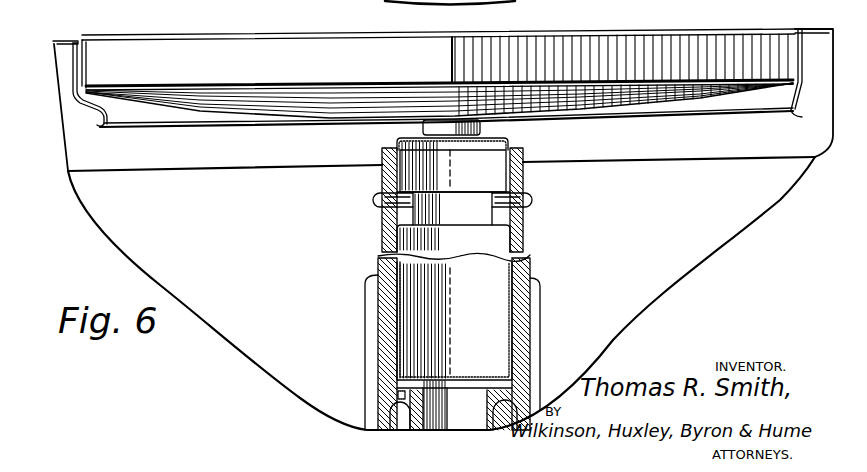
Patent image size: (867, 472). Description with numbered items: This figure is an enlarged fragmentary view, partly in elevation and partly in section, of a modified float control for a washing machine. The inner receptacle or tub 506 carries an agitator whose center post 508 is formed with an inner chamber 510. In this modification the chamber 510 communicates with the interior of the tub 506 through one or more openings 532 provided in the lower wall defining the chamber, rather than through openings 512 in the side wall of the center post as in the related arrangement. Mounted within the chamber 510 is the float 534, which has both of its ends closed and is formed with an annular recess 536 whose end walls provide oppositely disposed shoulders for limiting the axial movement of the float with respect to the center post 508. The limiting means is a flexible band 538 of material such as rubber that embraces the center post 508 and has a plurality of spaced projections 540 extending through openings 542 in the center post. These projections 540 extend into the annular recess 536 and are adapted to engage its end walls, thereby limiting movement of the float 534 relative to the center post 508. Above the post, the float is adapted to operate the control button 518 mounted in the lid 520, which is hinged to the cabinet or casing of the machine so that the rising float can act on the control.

The tub 506 is at (688, 261).
The center post 508 is at (531, 275).
The inner chamber 510 is at (512, 243).
The openings 512 is at (800, 29).
The control button 518 is at (423, 131).
The lid 520 is at (370, 67).
The openings 532 is at (397, 393).
The float 534 is at (510, 148).
The annular recess 536 is at (413, 218).
The flexible band 538 is at (522, 195).
The projections 540 is at (520, 178).
The openings 542 is at (533, 210).